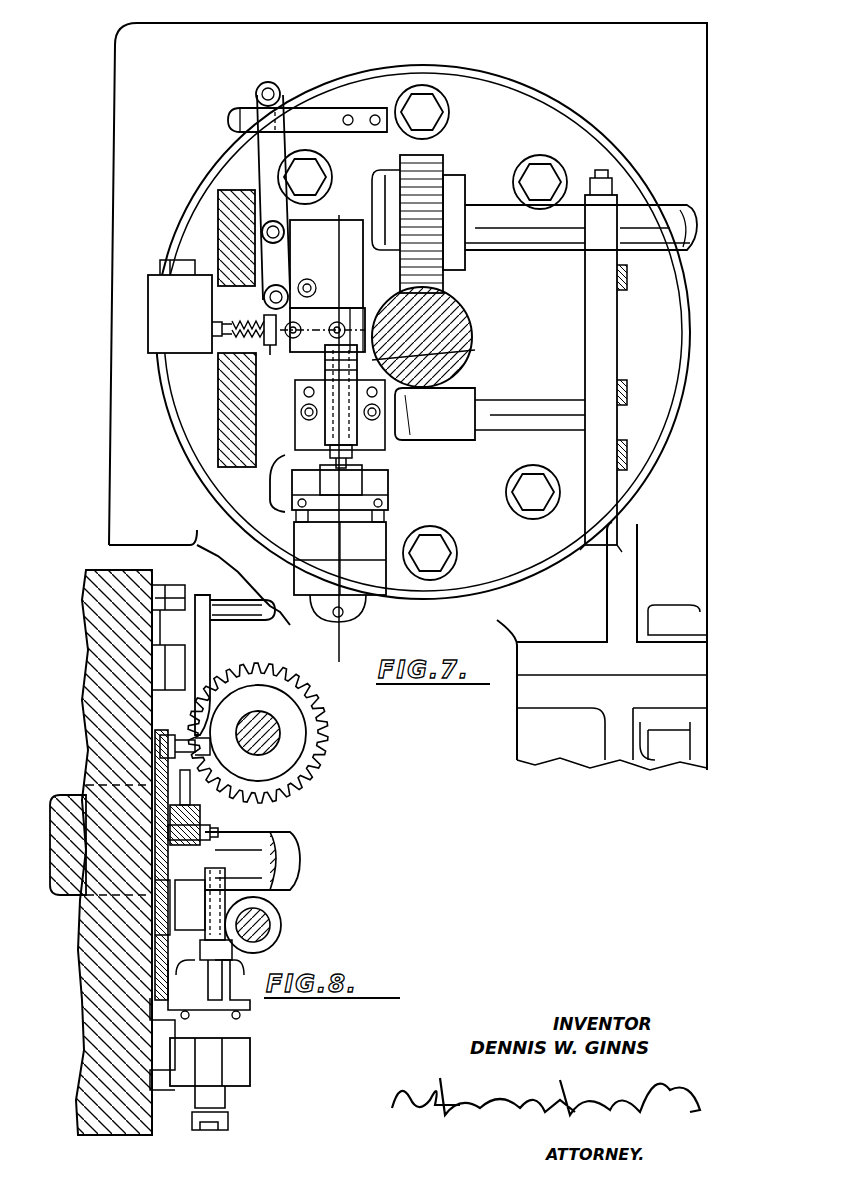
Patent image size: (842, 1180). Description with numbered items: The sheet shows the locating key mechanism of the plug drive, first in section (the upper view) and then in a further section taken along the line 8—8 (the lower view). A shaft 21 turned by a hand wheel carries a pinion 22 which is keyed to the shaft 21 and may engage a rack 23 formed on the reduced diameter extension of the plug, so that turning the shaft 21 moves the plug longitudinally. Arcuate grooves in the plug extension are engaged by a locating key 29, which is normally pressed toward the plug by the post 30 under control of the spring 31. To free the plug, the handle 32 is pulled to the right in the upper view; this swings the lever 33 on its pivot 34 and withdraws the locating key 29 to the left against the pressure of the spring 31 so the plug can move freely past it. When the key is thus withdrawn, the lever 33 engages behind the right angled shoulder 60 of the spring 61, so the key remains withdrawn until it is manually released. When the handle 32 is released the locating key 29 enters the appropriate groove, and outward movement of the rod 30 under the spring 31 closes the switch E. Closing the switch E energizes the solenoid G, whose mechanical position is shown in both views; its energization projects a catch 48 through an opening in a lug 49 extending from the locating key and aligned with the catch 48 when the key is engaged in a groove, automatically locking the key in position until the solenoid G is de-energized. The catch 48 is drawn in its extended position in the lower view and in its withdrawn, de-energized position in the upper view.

In FIG. 7, the section line 8— 8 is at (260, 215).
In FIG. 7, the shaft 21 is at (664, 205).
In FIG. 7, the pinion 22 is at (435, 160).
In FIG. 8, the pinion 22 is at (322, 722).
In FIG. 7, the rack 23 is at (440, 302).
In FIG. 8, the rack 23 is at (290, 830).
In FIG. 7, the locating key 29 is at (360, 308).
In FIG. 8, the locating key 29 is at (200, 818).
In FIG. 7, the post 30 is at (264, 330).
In FIG. 7, the spring 31 is at (212, 330).
In FIG. 7, the handle 32 is at (262, 85).
In FIG. 8, the handle 32 is at (232, 602).
In FIG. 7, the lever 33 is at (262, 152).
In FIG. 8, the lever 33 is at (204, 660).
In FIG. 7, the pivot 34 is at (228, 192).
In FIG. 8, the pivot 34 is at (160, 745).
In FIG. 7, the catch 48 is at (328, 426).
In FIG. 8, the catch 48 is at (228, 885).
In FIG. 7, the lug 49 is at (458, 353).
In FIG. 8, the lug 49 is at (210, 866).
In FIG. 7, the right angled shoulder 60 is at (302, 97).
In FIG. 7, the spring 61 is at (228, 118).
In FIG. 8, the spring 61 is at (160, 630).
In FIG. 7, the switch E is at (148, 318).
In FIG. 7, the solenoid G is at (372, 530).
In FIG. 8, the solenoid G is at (242, 1060).